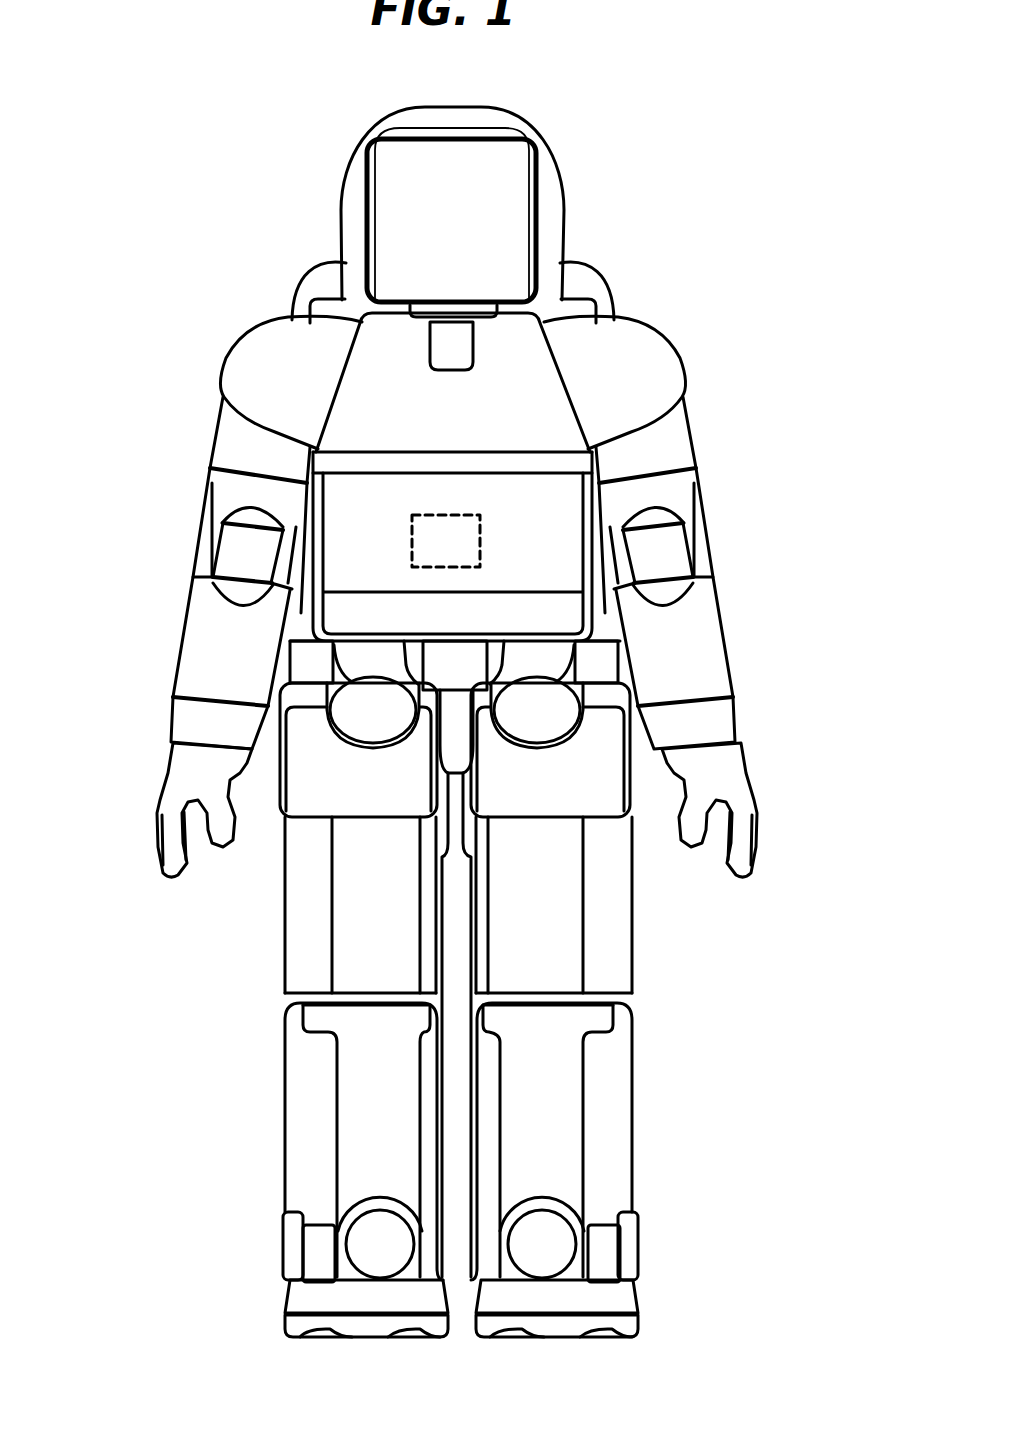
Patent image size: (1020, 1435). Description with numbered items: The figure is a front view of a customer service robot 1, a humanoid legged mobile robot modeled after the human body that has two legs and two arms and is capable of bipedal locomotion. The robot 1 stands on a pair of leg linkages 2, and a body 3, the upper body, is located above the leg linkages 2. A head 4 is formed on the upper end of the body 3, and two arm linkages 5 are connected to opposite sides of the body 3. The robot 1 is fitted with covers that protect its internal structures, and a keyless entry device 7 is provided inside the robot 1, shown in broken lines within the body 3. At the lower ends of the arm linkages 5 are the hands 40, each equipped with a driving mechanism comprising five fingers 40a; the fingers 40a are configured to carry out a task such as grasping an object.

The customer service robot 1 is at (608, 228).
The leg linkage 2 is at (251, 998).
The body 3 is at (568, 565).
The head 4 is at (530, 128).
The arm linkage 5 is at (190, 418).
The keyless entry device 7 is at (480, 542).
The hand 40 is at (153, 769).
The finger 40a is at (759, 827).